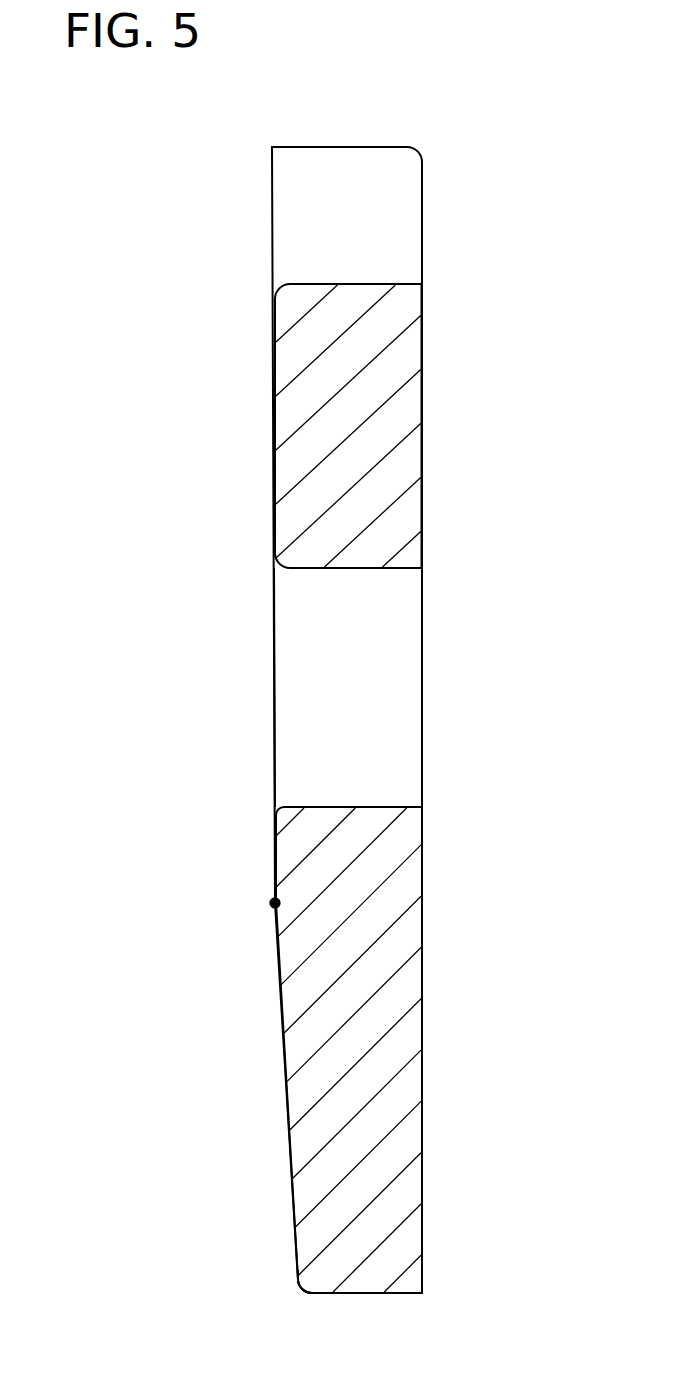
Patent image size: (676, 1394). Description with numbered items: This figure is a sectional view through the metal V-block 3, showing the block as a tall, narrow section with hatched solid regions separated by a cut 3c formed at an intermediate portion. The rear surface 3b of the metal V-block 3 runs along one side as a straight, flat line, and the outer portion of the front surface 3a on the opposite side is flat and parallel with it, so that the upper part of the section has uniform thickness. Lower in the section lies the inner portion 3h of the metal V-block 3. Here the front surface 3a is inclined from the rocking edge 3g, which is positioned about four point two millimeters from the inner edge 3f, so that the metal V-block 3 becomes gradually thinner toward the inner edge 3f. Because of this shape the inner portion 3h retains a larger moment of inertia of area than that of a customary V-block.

The metal V-block 3 is at (426, 159).
The front surface 3a is at (273, 423).
The rear surface 3b is at (421, 450).
The cuts 3c is at (395, 678).
The inner edge 3f is at (297, 1283).
The rocking edge 3g is at (275, 903).
The inner portion 3h is at (377, 1010).